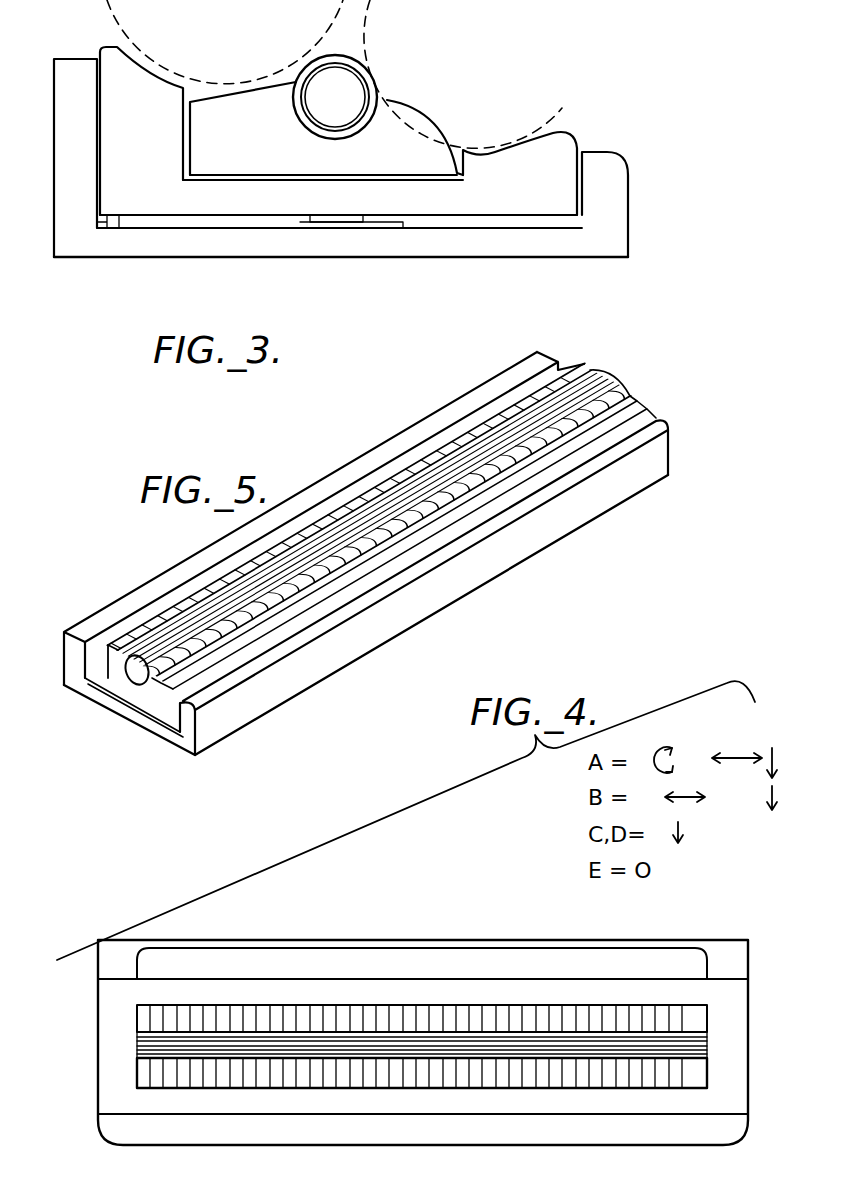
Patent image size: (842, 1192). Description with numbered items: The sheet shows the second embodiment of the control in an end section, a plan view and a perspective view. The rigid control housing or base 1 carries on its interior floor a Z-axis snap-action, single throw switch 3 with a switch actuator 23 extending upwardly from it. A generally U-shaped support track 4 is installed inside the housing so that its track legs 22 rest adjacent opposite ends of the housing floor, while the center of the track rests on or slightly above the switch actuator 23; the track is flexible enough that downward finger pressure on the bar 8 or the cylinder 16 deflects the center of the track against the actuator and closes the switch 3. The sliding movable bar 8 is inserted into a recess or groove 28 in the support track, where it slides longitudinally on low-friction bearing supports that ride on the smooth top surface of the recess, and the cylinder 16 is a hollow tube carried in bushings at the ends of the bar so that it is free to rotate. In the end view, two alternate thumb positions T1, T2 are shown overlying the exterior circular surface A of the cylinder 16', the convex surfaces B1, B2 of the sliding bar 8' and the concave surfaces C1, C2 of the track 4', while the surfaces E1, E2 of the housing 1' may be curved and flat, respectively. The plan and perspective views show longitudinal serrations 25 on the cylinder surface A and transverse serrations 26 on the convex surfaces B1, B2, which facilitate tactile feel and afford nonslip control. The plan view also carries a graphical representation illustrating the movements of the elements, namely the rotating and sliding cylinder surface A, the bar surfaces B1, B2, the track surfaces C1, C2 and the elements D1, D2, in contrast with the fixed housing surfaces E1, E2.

In FIG. 3, the exterior circular surface A is at (357, 60).
In FIG. 5, the exterior circular surface A is at (612, 378).
In FIG. 4, the exterior circular surface A is at (157, 1052).
In FIG. 3, the convex surface B1 is at (423, 116).
In FIG. 5, the convex surface B1 is at (625, 392).
In FIG. 4, the convex surface B1 is at (157, 1078).
In FIG. 3, the convex surface B2 is at (263, 82).
In FIG. 5, the convex surface B2 is at (588, 366).
In FIG. 4, the convex surface B2 is at (157, 1022).
In FIG. 3, the concave surface C1 is at (492, 153).
In FIG. 5, the concave surface C1 is at (645, 404).
In FIG. 4, the concave surface C1 is at (522, 1096).
In FIG. 3, the concave surface C2 is at (140, 73).
In FIG. 5, the concave surface C2 is at (562, 368).
In FIG. 4, the concave surface C2 is at (522, 992).
In FIG. 4, the first channel side D1 is at (113, 1050).
In FIG. 4, the second channel side D2 is at (726, 1040).
In FIG. 3, the housing surface E1 is at (613, 162).
In FIG. 5, the housing surface E1 is at (660, 432).
In FIG. 4, the housing surface E1 is at (455, 1122).
In FIG. 3, the housing surface E2 is at (76, 62).
In FIG. 5, the housing surface E2 is at (540, 356).
In FIG. 4, the housing surface E2 is at (447, 958).
In FIG. 3, the thumb position T1 is at (370, 28).
In FIG. 3, the thumb position T2 is at (120, 32).
In FIG. 5, the control housing or base 1 is at (366, 615).
In FIG. 4, the control housing or base 1 is at (423, 1042).
In FIG. 3, the housing 1' is at (383, 222).
In FIG. 3, the Z-axis snap-action single throw switch 3 is at (393, 230).
In FIG. 4, the Z-axis snap-action single throw switch 3 is at (313, 905).
In FIG. 5, the support track 4 is at (77, 662).
In FIG. 3, the track 4' is at (626, 137).
In FIG. 5, the sliding movable bar 8 is at (77, 703).
In FIG. 3, the sliding bar 8' is at (544, 89).
In FIG. 5, the cylinder 16 is at (133, 723).
In FIG. 3, the cylinder 16' is at (449, 76).
In FIG. 3, the track legs 22 is at (108, 230).
In FIG. 3, the switch actuator 23 is at (337, 230).
In FIG. 4, the longitudinal serrations 25 is at (695, 1040).
In FIG. 4, the transverse serrations 26 is at (672, 1012).
In FIG. 3, the recess or groove 28 is at (190, 182).